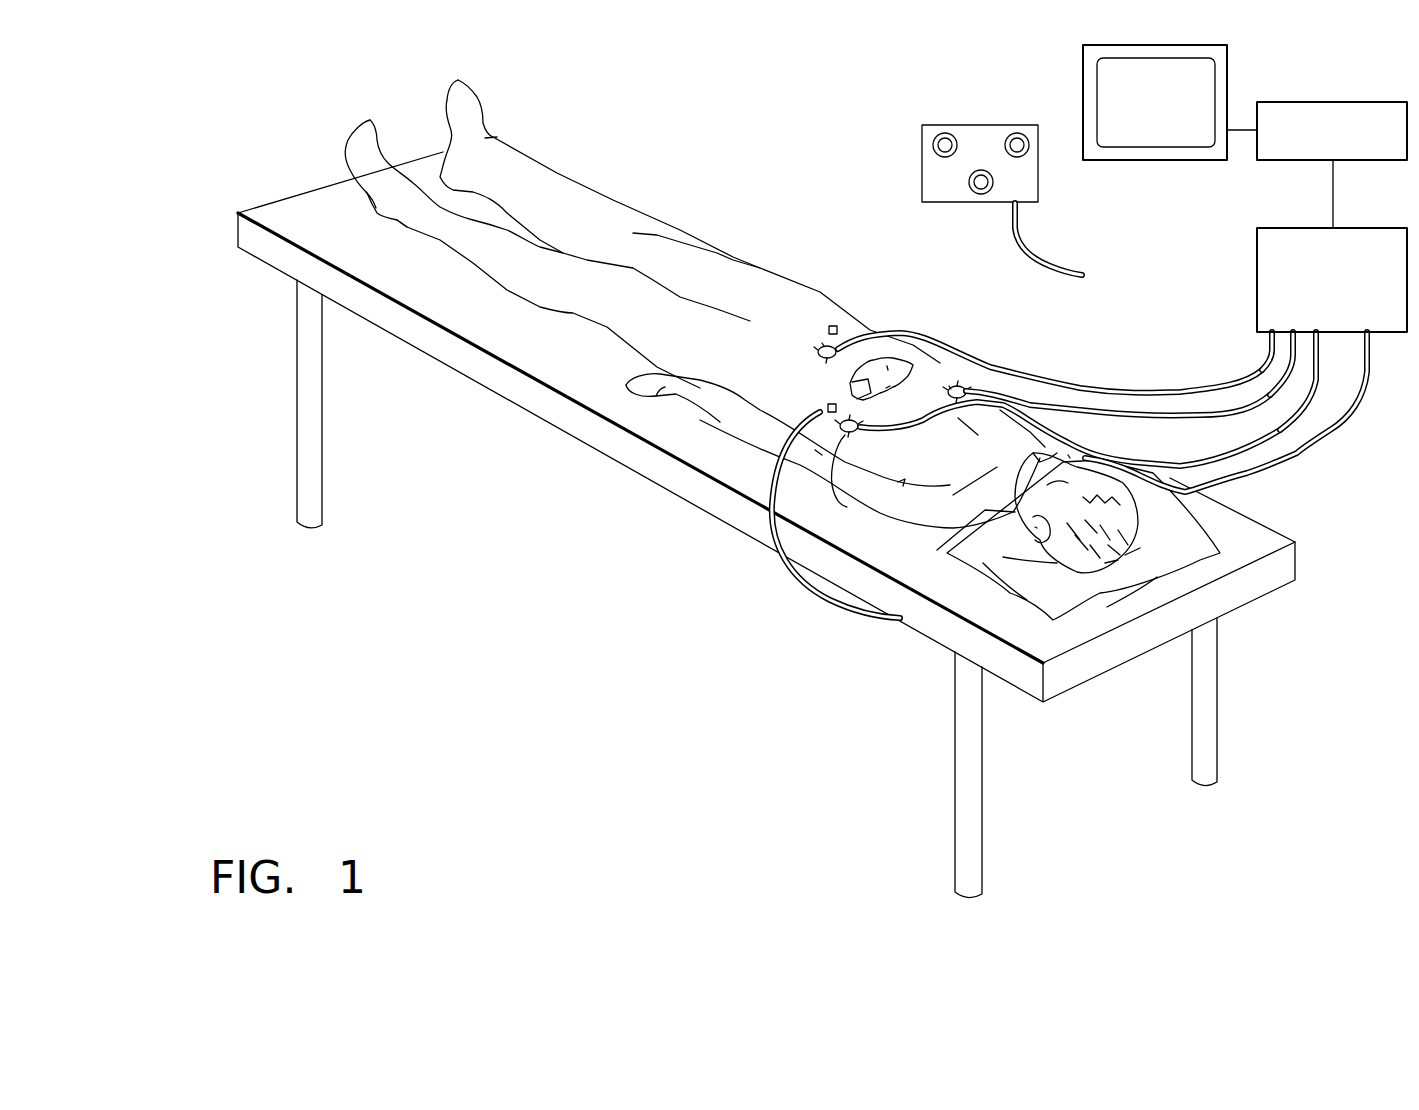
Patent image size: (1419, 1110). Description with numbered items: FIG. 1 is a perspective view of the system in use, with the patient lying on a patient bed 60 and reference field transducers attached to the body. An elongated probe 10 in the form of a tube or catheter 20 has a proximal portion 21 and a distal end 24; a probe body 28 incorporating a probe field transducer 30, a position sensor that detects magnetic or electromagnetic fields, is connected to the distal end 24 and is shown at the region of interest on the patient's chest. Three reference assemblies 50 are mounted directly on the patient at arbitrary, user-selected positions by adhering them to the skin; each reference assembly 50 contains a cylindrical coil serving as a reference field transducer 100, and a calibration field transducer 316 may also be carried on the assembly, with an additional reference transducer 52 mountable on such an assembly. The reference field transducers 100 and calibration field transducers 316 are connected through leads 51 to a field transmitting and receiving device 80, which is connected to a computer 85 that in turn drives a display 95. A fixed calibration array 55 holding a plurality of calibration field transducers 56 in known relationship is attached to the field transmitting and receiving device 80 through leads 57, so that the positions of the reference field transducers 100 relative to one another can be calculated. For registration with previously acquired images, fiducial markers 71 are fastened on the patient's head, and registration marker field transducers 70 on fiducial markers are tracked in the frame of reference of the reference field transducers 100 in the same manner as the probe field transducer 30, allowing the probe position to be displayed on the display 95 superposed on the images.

The probe 10 is at (806, 520).
The catheter 20 is at (806, 520).
The catheter proximal portion 21 is at (823, 603).
The distal end 24 is at (850, 385).
The probe body 28 is at (890, 348).
The probe field transducer 30 is at (887, 390).
The reference assembly 50 is at (803, 330).
The leads 51 is at (1208, 383).
The reference transducer 52 is at (847, 507).
The calibration array 55 is at (1005, 175).
The calibration field transducer 56 is at (1008, 128).
The leads 57 is at (1043, 256).
The patient bed 60 is at (1266, 538).
The registration marker field transducer 70 is at (837, 326).
The fiducial marker 71 is at (1068, 455).
The field transmitting and receiving device 80 is at (1352, 228).
The computer 85 is at (1360, 102).
The display 95 is at (1228, 70).
The reference field transducer 100 is at (827, 352).
The calibration field transducer 316 is at (822, 343).